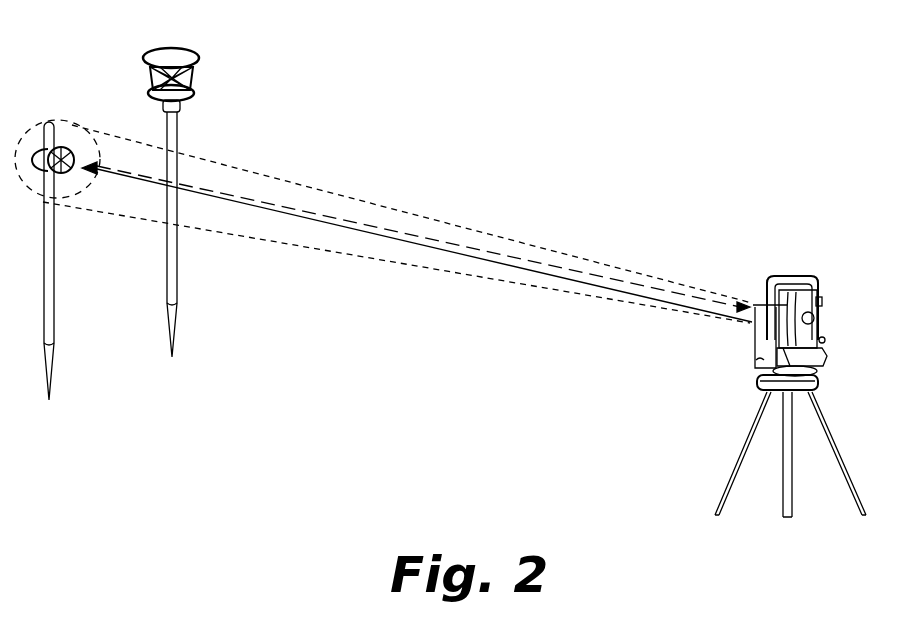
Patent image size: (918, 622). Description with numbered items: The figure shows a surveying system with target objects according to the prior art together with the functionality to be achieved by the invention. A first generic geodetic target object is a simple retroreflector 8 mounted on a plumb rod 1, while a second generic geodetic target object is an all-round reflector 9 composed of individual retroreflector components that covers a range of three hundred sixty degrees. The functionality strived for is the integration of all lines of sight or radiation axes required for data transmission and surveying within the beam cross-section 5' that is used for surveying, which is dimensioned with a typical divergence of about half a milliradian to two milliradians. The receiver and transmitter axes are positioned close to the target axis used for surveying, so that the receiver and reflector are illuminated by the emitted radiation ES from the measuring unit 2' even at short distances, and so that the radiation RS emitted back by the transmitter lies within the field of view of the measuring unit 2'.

The plumb rod 1 is at (52, 330).
The beam cross-section 5' is at (76, 207).
The retroreflector 8 is at (63, 152).
The all-round reflector 9 is at (163, 57).
The measuring unit 2' is at (742, 396).
The radiation emitted back RS is at (412, 218).
The emitted radiation ES is at (397, 247).